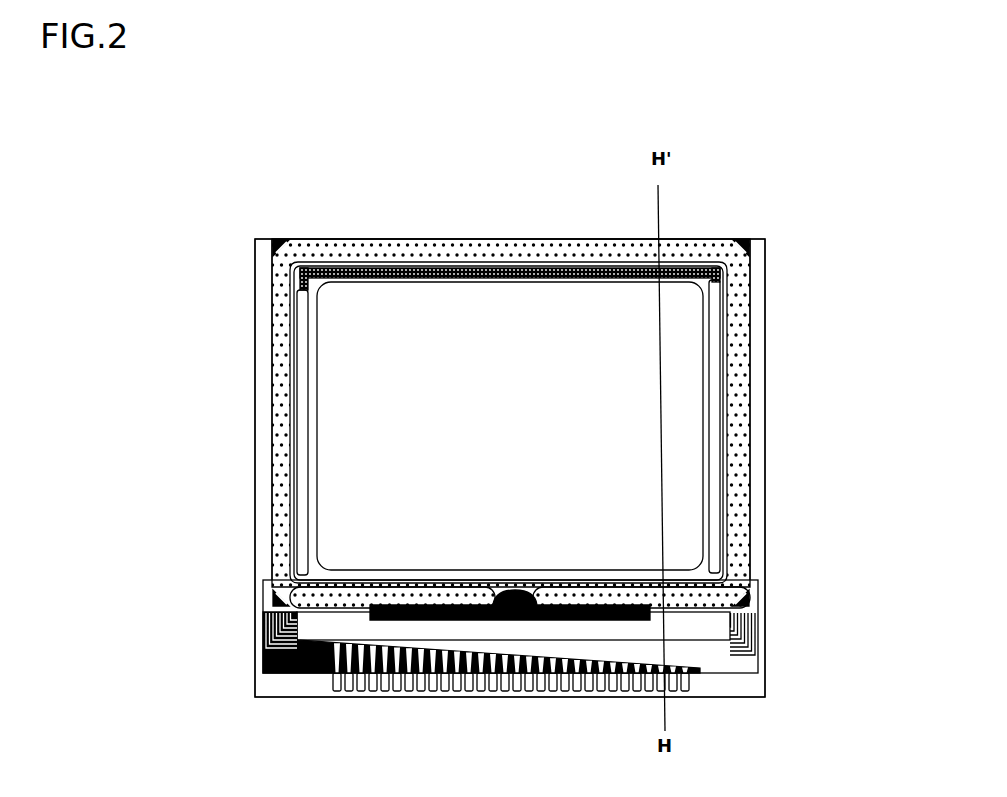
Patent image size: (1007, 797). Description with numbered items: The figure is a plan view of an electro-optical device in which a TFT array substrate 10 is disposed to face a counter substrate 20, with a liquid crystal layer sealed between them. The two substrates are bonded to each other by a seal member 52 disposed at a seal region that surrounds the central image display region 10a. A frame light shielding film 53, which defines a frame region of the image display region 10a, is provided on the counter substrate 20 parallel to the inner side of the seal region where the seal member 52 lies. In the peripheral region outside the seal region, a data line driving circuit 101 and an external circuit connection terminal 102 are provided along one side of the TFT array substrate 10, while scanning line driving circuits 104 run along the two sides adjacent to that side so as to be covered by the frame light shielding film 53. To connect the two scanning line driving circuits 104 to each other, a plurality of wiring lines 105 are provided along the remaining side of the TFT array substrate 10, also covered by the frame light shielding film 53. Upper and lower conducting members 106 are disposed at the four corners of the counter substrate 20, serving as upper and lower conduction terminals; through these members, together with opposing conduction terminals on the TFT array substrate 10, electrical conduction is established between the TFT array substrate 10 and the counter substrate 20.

The TFT array substrate 10 is at (377, 237).
The image display region 10a is at (510, 426).
The counter substrate 20 is at (504, 237).
The seal member 52 is at (742, 382).
The frame light shielding film 53 is at (698, 573).
The data line driving circuit 101 is at (340, 628).
The external circuit connection terminal 102 is at (482, 678).
The scanning line driving circuit 104 is at (300, 310).
The wiring lines 105 is at (430, 272).
The upper and lower conducting members 106 is at (272, 240).